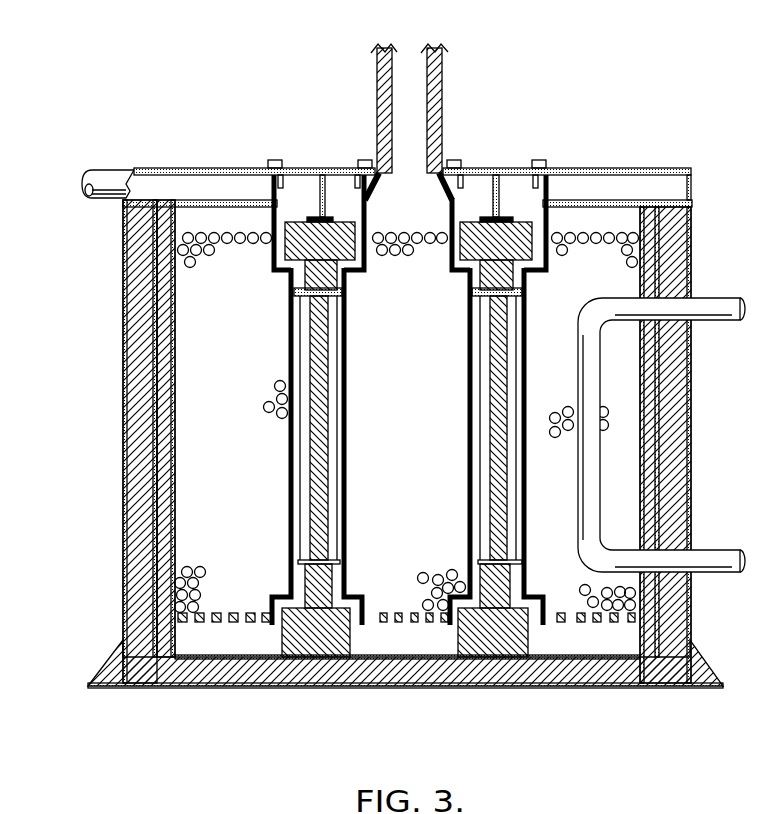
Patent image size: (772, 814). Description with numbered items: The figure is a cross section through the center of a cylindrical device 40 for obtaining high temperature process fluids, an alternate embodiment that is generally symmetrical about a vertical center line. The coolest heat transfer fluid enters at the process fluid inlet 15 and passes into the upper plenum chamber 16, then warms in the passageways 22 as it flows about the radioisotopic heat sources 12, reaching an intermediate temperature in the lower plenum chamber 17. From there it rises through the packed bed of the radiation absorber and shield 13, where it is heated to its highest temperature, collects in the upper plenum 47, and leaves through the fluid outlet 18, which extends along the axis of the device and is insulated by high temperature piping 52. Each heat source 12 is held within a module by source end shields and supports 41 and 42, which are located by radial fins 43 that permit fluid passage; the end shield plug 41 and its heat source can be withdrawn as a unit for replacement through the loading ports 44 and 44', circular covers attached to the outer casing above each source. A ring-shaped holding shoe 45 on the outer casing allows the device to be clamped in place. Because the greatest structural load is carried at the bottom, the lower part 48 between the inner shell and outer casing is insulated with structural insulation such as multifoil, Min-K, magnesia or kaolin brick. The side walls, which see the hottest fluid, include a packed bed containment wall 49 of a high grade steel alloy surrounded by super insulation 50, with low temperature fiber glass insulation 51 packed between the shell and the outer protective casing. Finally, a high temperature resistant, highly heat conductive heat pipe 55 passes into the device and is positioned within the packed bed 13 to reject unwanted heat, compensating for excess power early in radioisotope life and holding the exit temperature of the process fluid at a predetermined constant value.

The source of penetrating radiation 12 is at (330, 333).
The radiation absorber and shield 13 is at (267, 408).
The process fluid inlet 15 is at (103, 178).
The upper plenum chamber 16 is at (470, 194).
The lower or intermediate plenum chamber 17 is at (223, 638).
The fluid outlet 18 is at (403, 80).
The passageways 22 is at (286, 284).
The cylindrical device 40 is at (80, 406).
The source end shield and support 41 is at (287, 248).
The source end shield and support 42 is at (316, 650).
The radial fins 43 is at (268, 606).
The loading port 44 is at (254, 153).
The loading port 44' is at (567, 165).
The holding shoe 45 is at (699, 676).
The upper plenum 47 is at (594, 218).
The lower part insulation 48 is at (546, 660).
The packed bed containment wall 49 is at (176, 470).
The super insulation 50 is at (165, 526).
The fiber glass insulation 51 is at (688, 443).
The high temperature piping 52 is at (433, 98).
The heat pipe 55 is at (717, 305).